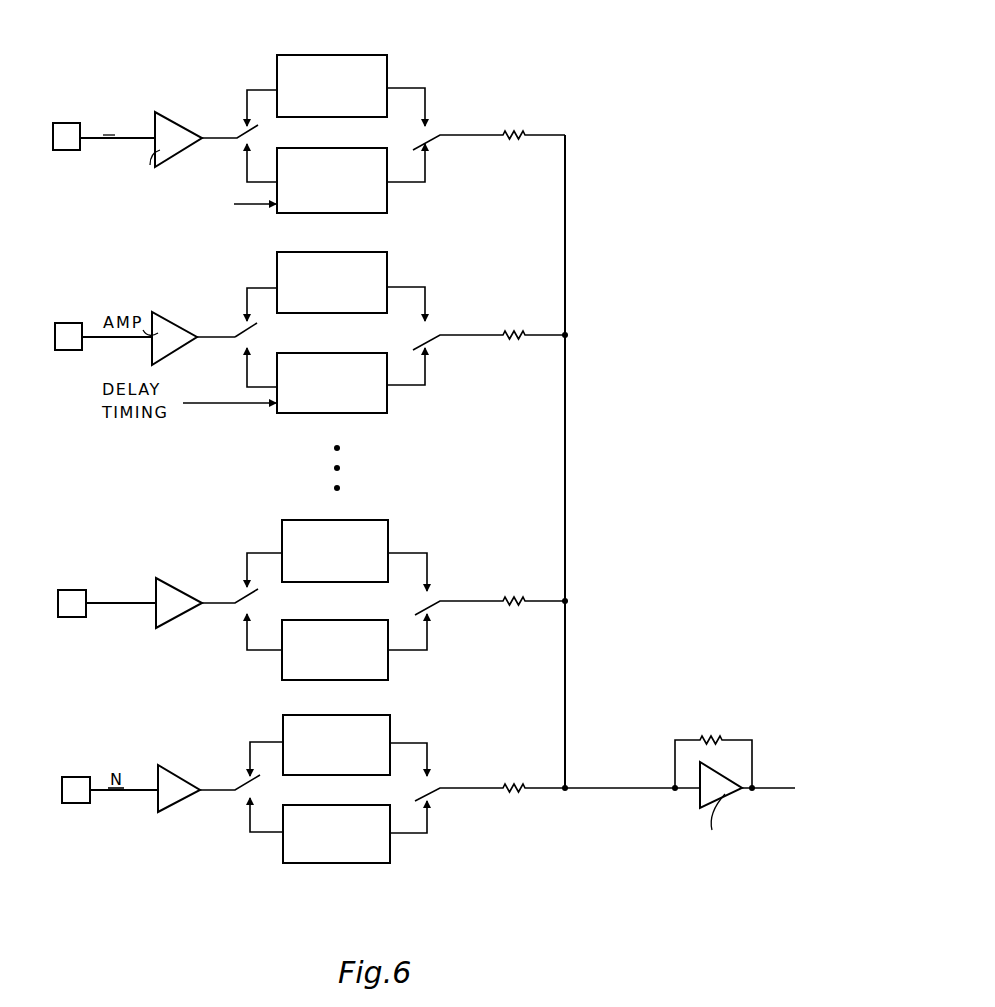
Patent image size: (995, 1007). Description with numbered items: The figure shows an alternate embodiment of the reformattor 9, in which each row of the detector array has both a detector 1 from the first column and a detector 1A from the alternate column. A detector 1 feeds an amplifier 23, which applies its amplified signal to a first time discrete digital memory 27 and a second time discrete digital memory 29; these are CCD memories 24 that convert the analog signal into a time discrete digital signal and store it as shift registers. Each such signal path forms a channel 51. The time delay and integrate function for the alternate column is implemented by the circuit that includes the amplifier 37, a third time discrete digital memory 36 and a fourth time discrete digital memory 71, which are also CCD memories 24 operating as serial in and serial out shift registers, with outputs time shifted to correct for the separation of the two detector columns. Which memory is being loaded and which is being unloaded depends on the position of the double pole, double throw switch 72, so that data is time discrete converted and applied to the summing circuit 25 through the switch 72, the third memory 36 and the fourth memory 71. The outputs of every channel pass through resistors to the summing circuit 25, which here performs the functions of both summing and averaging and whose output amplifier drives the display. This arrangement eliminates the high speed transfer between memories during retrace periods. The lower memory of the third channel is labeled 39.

The detector 1 is at (66, 136).
The detector 1A is at (72, 563).
The reformattor 9 is at (610, 914).
The amplifier 23 is at (180, 119).
The CCD memory 24 is at (310, 436).
The summing circuit 25 is at (584, 140).
The first time discrete digital memory 27 is at (389, 68).
The second time discrete digital memory 29 is at (387, 200).
The third time discrete digital memory 36 is at (388, 266).
The amplifier 37 is at (166, 318).
The CCD memory (lower) 39 is at (390, 668).
The channel 51 is at (124, 240).
The fourth time discrete digital memory 71 is at (378, 413).
The double pole, double throw switch 72 is at (221, 321).